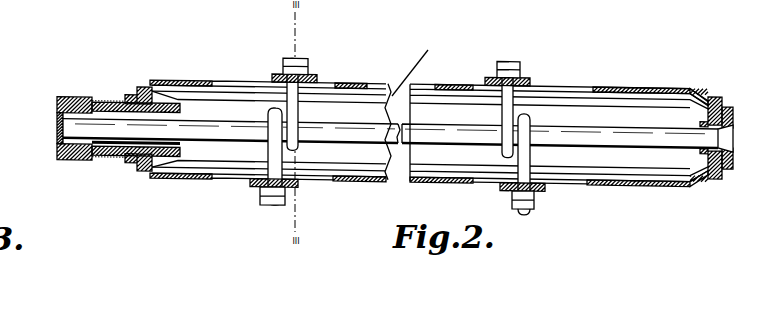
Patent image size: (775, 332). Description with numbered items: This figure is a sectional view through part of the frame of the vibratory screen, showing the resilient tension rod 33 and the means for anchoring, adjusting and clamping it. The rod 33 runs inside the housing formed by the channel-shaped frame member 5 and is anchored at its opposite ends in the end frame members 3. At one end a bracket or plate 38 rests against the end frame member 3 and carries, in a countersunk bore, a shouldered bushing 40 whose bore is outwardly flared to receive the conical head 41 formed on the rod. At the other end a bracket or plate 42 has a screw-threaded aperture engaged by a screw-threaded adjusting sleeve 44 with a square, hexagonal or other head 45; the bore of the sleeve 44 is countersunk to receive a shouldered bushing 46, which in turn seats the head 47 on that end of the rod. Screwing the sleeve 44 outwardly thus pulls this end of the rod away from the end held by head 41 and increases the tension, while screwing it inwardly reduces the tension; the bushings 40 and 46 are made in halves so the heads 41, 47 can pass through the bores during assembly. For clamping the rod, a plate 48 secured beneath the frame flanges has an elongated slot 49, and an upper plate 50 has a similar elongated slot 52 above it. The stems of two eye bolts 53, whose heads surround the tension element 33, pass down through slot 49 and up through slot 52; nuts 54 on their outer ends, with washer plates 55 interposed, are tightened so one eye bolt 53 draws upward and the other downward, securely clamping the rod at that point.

The end frame member 3 is at (696, 199).
The frame member 5 is at (200, 94).
The tension rod 33 is at (246, 137).
The bracket or plate 38 is at (717, 101).
The shouldered bushing 40 is at (733, 122).
The conical head 41 is at (734, 146).
The bracket or plate 42 is at (141, 87).
The adjusting sleeve 44 is at (104, 101).
The head 45 is at (70, 96).
The shouldered bushing 46 is at (70, 161).
The head 47 is at (57, 124).
The plate 48 is at (430, 184).
The elongated slot 49 is at (230, 181).
The plate 50 is at (349, 85).
The elongated slot 52 is at (238, 82).
The eye bolt 53 is at (272, 113).
The nut 54 is at (303, 59).
The washer plate 55 is at (278, 73).